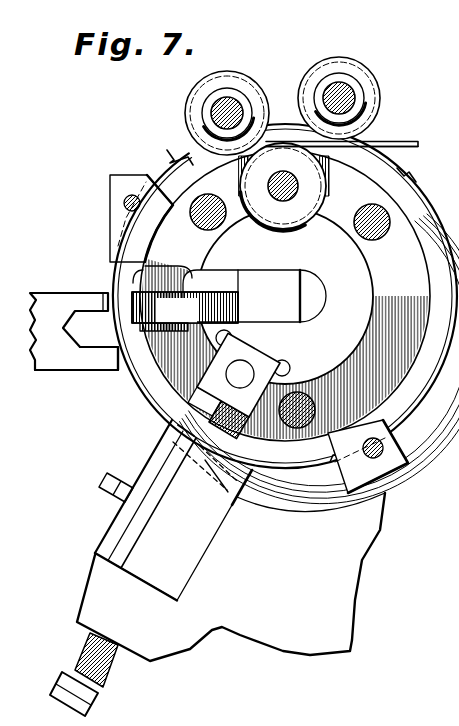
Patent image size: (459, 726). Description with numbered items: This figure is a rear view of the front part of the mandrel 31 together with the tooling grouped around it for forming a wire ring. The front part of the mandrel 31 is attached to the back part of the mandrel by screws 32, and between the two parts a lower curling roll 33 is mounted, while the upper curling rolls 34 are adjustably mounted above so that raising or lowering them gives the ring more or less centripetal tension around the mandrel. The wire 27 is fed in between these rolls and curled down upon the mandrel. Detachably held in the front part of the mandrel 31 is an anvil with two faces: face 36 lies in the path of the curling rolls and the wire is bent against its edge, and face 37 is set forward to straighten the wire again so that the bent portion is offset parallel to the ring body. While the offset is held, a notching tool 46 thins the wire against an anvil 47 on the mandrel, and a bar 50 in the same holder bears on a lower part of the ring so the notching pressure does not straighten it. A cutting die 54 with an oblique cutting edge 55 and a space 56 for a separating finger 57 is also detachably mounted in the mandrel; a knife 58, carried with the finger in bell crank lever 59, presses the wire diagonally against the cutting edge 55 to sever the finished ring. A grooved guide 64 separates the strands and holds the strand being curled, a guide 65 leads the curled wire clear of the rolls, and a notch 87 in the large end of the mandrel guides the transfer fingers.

The wire 27 is at (407, 138).
The front part of the mandrel 31 is at (285, 296).
The screws 32 is at (204, 223).
The lower curling roll 33 is at (277, 157).
The upper curling rolls 34 is at (226, 80).
The face of the anvil 36 is at (190, 282).
The face of the anvil 37 is at (180, 331).
The notching tool 46 is at (93, 293).
The anvil 47 is at (185, 307).
The bar 50 is at (97, 357).
The cutting die 54 is at (265, 355).
The oblique cutting edge 55 is at (240, 420).
The space for separating finger 56 is at (203, 352).
The separating finger 57 is at (178, 425).
The knife 58 is at (210, 455).
The bell crank lever 59 is at (217, 604).
The guide 64 is at (110, 197).
The guide 65 is at (375, 472).
The notch 87 is at (167, 150).